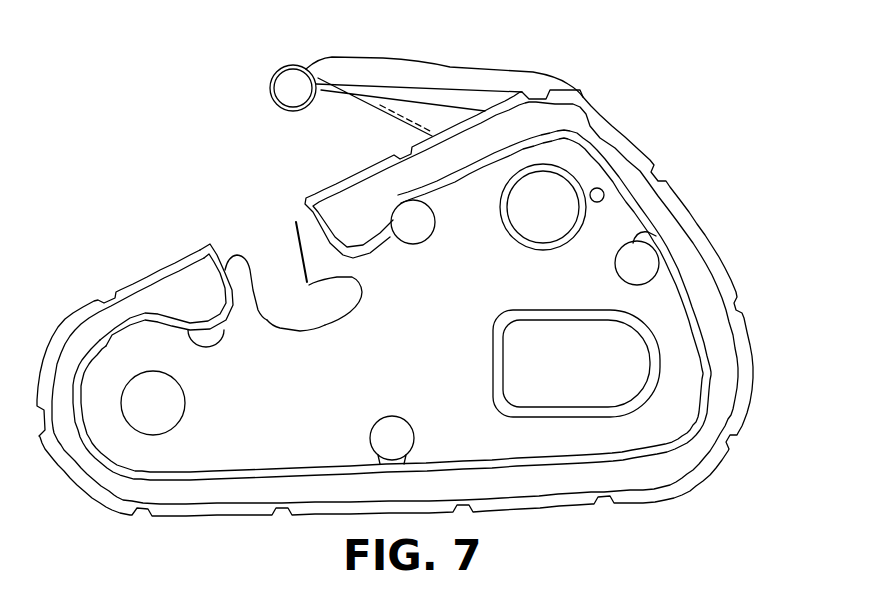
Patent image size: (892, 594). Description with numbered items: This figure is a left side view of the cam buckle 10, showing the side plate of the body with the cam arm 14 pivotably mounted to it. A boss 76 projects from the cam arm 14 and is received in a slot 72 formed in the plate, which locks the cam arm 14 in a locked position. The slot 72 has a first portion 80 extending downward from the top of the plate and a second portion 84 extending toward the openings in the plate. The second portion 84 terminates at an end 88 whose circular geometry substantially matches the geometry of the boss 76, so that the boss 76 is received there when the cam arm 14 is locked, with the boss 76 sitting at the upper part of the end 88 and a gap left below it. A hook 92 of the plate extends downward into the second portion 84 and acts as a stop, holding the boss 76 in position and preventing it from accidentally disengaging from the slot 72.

The cam buckle 10 is at (722, 103).
The cam arm 14 is at (417, 73).
The boss 76 is at (293, 90).
The hook 92 is at (305, 281).
The slot 72 is at (255, 243).
The end 88 is at (361, 297).
The second portion 84 is at (335, 310).
The first portion 80 is at (277, 290).